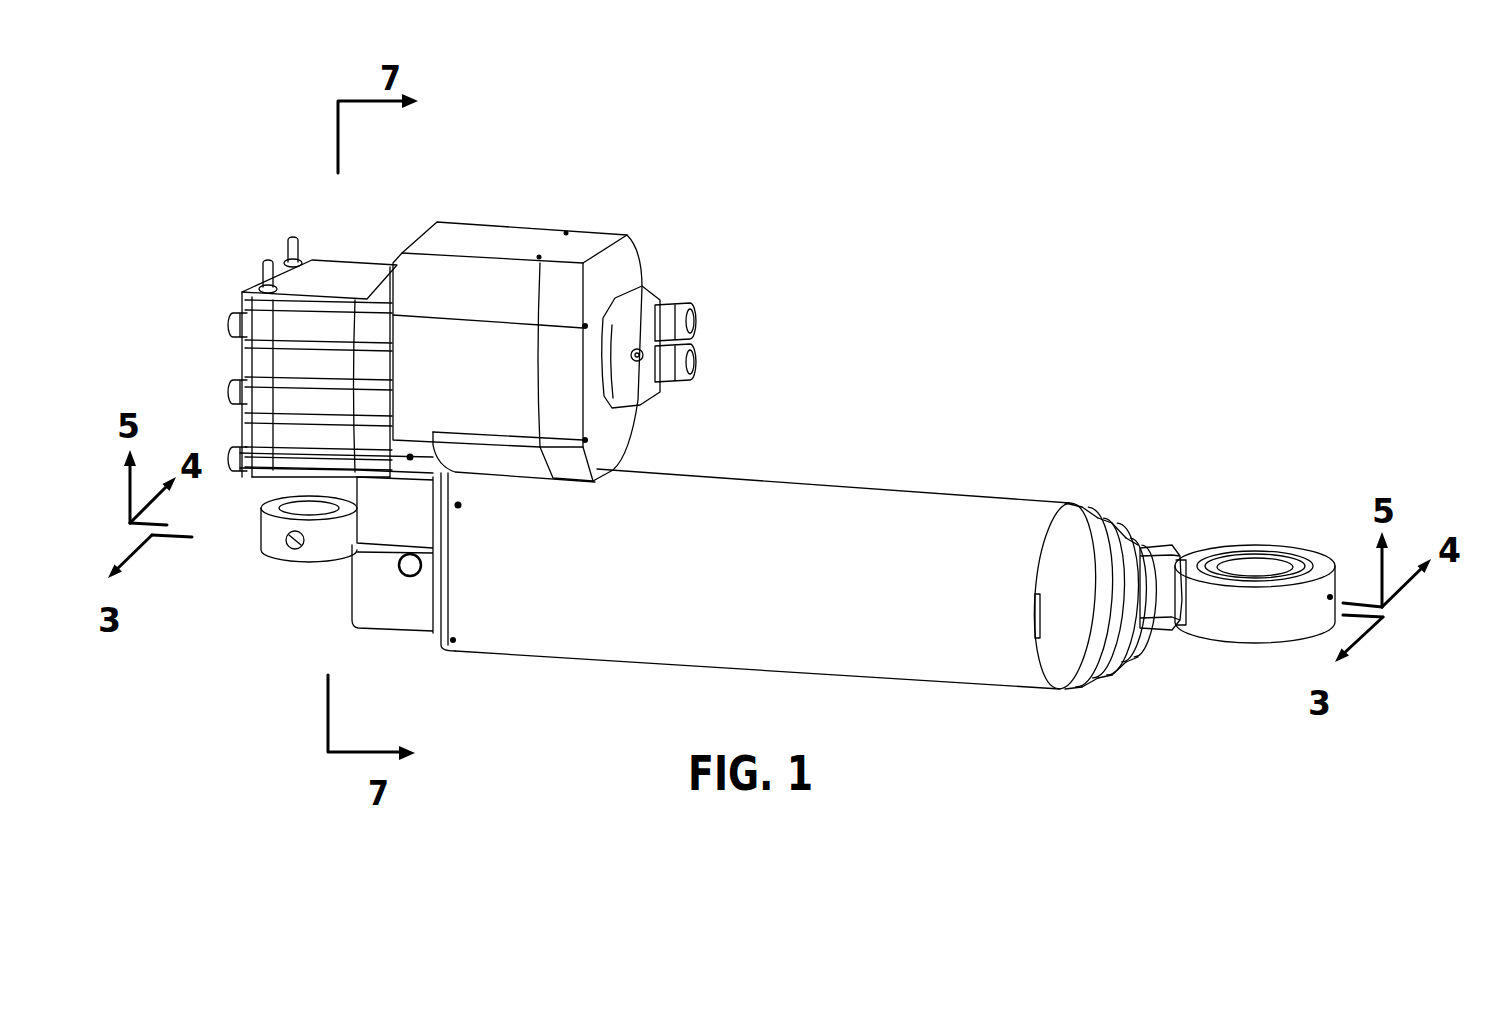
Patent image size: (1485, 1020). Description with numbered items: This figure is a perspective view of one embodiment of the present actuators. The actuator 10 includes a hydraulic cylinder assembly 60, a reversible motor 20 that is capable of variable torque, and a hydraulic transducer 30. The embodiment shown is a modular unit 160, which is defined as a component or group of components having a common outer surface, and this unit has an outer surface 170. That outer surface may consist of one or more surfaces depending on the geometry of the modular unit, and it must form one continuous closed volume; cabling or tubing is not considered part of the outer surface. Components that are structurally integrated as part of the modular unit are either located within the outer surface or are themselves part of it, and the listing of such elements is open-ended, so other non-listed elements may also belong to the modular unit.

The actuator 10 is at (966, 377).
The reversible motor 20 is at (517, 227).
The hydraulic transducer 30 is at (362, 245).
The hydraulic cylinder assembly 60 is at (555, 653).
The modular unit 160 is at (1130, 734).
The outer surface 170 is at (738, 475).